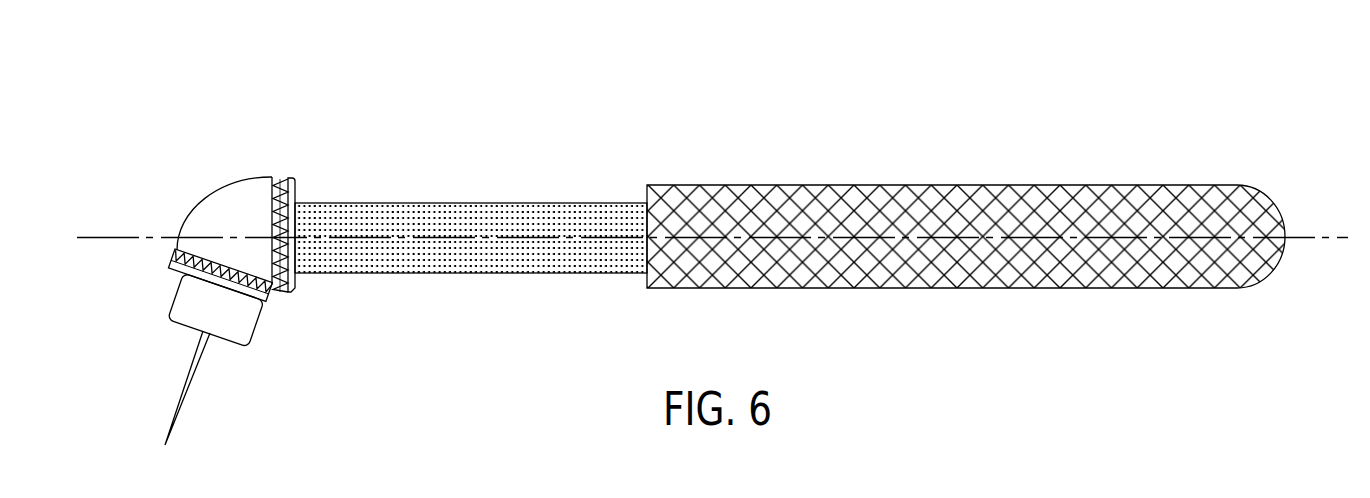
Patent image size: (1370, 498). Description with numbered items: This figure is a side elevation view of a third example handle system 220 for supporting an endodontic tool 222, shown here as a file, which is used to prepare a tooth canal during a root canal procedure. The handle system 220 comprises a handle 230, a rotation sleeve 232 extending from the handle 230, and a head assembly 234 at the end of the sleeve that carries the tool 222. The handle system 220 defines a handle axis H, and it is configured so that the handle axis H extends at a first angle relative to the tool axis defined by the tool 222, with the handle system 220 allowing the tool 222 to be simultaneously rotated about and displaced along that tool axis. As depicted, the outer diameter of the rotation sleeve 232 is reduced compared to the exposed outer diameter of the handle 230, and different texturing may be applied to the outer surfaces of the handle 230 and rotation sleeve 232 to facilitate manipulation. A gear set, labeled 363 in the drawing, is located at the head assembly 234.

The handle system 220 is at (1155, 77).
The handle 230 is at (1008, 177).
The rotation sleeve 232 is at (470, 203).
The head assembly 234 is at (155, 312).
The bevel gear 363 is at (272, 314).
The endodontic tool 222 is at (190, 392).
The handle axis H is at (1297, 233).